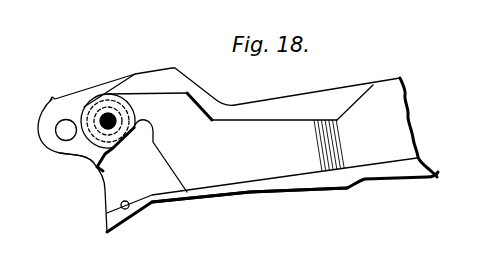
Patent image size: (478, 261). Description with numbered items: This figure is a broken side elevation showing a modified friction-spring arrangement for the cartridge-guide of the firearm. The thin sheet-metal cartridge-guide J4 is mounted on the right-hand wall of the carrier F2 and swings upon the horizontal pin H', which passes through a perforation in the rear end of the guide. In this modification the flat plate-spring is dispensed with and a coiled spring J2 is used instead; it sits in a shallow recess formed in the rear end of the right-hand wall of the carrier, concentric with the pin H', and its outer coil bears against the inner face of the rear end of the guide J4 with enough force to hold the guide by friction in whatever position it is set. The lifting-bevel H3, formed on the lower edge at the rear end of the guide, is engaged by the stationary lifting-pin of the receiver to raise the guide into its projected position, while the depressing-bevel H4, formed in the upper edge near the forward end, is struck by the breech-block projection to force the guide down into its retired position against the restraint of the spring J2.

The cartridge-guide J4 is at (238, 150).
The horizontal pin H' is at (121, 121).
The lifting-bevel H3 is at (174, 162).
The depressing-bevel H4 is at (352, 102).
The coiled spring J2 is at (92, 145).
The carrier F2 is at (266, 185).